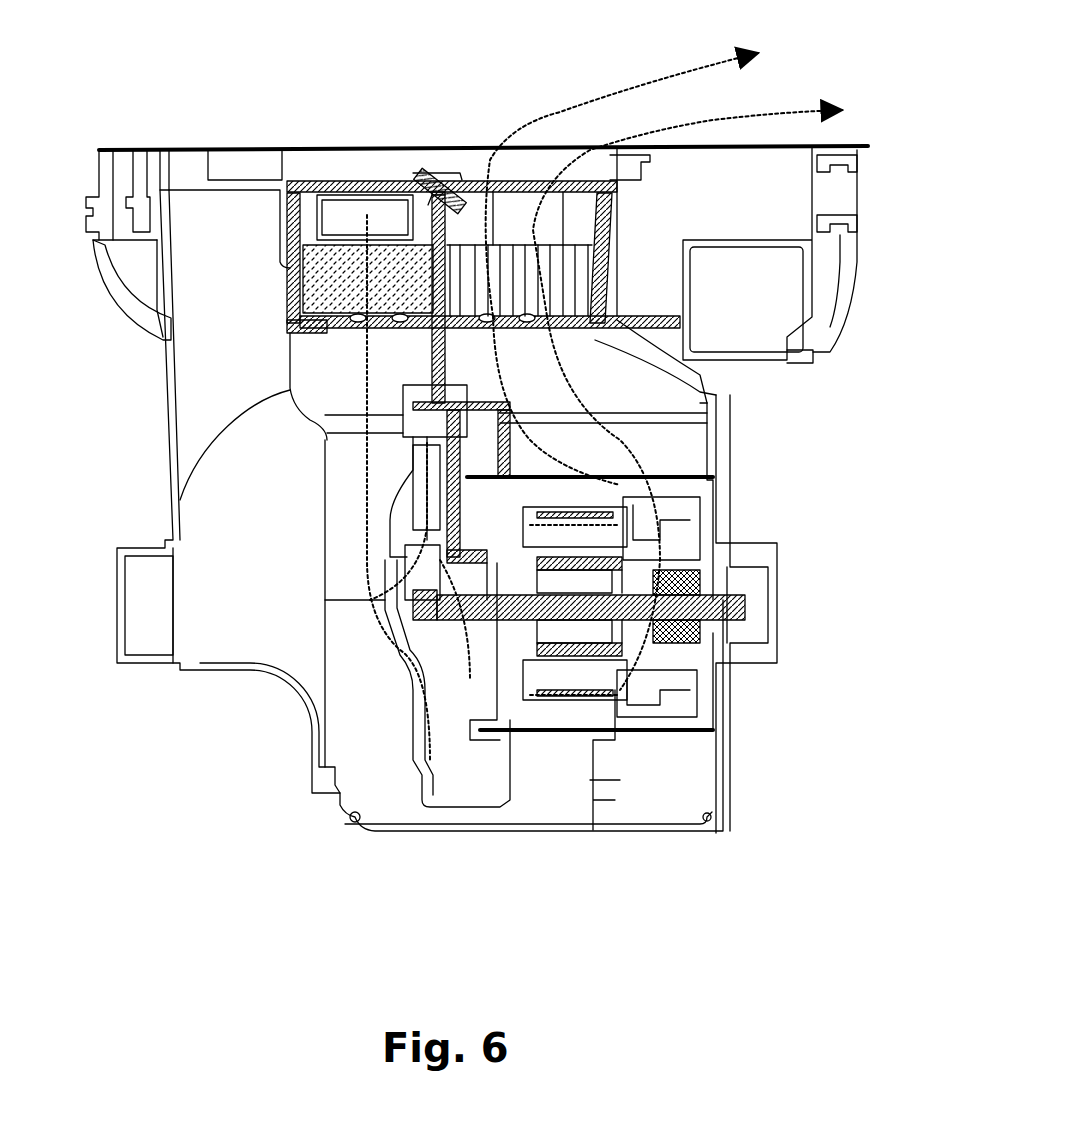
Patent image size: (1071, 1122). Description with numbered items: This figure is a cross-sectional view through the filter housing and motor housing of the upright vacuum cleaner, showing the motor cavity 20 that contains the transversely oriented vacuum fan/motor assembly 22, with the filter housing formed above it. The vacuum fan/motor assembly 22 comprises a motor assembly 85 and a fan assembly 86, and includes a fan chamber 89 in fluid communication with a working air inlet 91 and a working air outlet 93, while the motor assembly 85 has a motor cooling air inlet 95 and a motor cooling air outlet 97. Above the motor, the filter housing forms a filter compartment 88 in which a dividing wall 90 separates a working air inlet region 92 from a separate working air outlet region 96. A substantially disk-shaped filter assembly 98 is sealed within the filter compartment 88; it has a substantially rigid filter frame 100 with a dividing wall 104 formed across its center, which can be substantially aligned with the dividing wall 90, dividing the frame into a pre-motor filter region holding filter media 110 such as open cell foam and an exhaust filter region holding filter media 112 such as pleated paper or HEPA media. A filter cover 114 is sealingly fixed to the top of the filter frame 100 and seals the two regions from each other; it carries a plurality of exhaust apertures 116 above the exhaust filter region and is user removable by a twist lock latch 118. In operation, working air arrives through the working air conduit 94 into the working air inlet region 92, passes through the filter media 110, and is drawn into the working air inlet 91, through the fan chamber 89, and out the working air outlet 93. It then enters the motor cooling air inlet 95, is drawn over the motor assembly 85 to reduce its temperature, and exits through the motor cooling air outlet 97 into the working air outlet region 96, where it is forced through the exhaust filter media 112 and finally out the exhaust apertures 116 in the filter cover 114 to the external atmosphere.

The motor cavity 20 is at (692, 773).
The vacuum fan/motor assembly 22 is at (628, 752).
The motor assembly 85 is at (580, 673).
The fan assembly 86 is at (403, 680).
The filter compartment 88 is at (290, 293).
The fan chamber 89 is at (415, 518).
The dividing wall 90 is at (435, 416).
The working air inlet 91 is at (395, 548).
The working air inlet region 92 is at (343, 493).
The working air outlet 93 is at (367, 350).
The working air conduit 94 is at (350, 215).
The motor cooling air inlet 95 is at (507, 513).
The working air outlet region 96 is at (606, 456).
The motor cooling air outlet 97 is at (677, 525).
The filter assembly 98 is at (625, 227).
The filter frame 100 is at (432, 347).
The dividing wall 104 is at (437, 176).
The filter media 110 is at (293, 327).
The filter media 112 is at (575, 340).
The filter cover 114 is at (476, 186).
The exhaust apertures 116 is at (490, 192).
The twist lock latch 118 is at (437, 200).